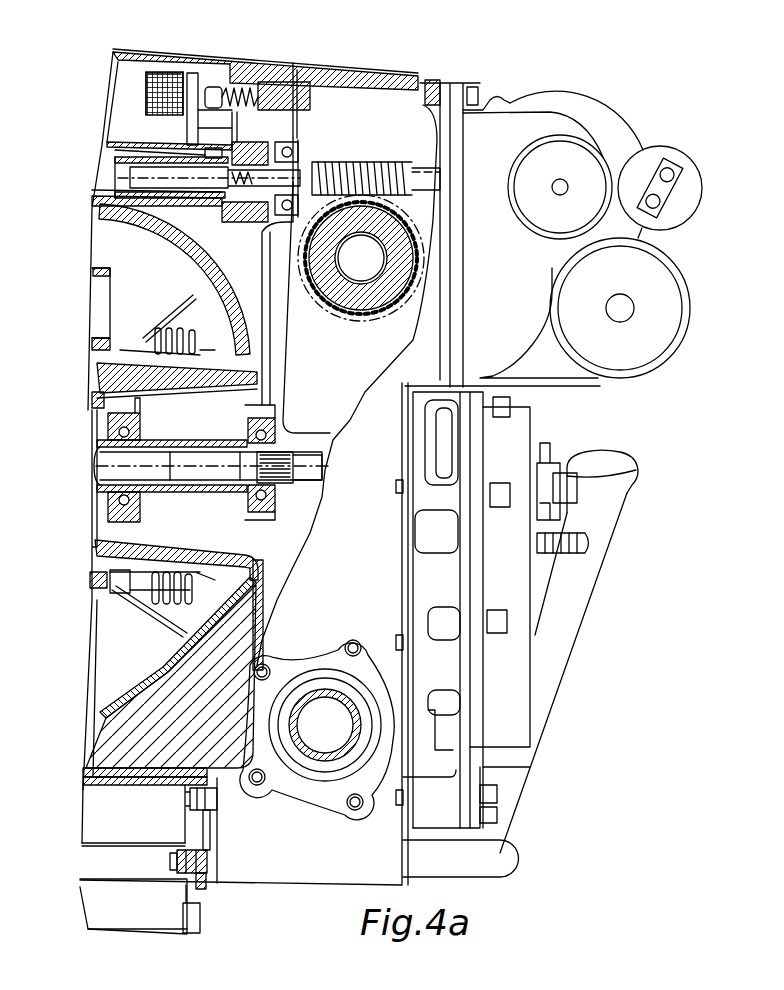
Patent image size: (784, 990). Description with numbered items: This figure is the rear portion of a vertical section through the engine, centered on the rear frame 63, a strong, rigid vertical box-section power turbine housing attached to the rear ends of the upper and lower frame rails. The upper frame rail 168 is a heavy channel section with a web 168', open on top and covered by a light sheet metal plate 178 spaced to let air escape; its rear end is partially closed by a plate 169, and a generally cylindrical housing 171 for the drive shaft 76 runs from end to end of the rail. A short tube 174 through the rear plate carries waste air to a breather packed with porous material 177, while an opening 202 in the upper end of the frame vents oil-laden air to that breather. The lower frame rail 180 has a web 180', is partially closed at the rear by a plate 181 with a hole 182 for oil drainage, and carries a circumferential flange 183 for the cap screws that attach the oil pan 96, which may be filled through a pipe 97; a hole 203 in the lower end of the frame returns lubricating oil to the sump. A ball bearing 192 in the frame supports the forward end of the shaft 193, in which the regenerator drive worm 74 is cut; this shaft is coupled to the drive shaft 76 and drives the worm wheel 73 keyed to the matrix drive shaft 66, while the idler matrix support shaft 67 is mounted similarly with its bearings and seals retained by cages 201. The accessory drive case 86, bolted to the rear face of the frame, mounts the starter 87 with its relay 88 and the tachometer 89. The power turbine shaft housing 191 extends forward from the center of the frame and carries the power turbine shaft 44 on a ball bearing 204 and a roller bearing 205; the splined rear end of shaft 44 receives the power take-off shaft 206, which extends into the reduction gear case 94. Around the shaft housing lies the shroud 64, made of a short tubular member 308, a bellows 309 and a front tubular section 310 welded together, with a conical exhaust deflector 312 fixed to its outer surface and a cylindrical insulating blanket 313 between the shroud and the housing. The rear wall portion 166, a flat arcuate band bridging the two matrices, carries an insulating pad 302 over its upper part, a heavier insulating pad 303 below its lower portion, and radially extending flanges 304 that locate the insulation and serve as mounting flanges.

The power turbine shaft 44 is at (107, 455).
The rear frame 63 is at (271, 335).
The shaft housing shroud 64 is at (163, 641).
The matrix drive shaft 66 is at (387, 292).
The matrix support shaft 67 is at (342, 707).
The worm wheel 73 is at (350, 323).
The regenerator drive worm 74 is at (393, 165).
The drive shaft 76 is at (140, 174).
The accessory drive case 86 is at (592, 107).
The starter 87 is at (656, 364).
The relay 88 is at (687, 188).
The tachometer 89 is at (588, 165).
The reduction gear case 94 is at (448, 675).
The oil pan 96 is at (97, 906).
The pipe 97 is at (573, 608).
The rear wall portion 166 is at (130, 690).
The upper frame rail 168 is at (186, 231).
The web 168' is at (125, 198).
The plate 169 is at (229, 86).
The housing 171 is at (118, 150).
The short tube 174 is at (208, 124).
The porous material 177 is at (172, 72).
The sheet metal plate 178 is at (272, 62).
The lower frame rail 180 is at (120, 830).
The web 180' is at (115, 791).
The plate 181 is at (190, 795).
The hole 182 is at (200, 830).
The circumferential flange 183 is at (80, 860).
The power turbine shaft housing 191 is at (93, 522).
The ball bearing 192 is at (298, 148).
The shaft 193 is at (313, 167).
The cages 201 is at (295, 668).
The opening 202 is at (283, 95).
The hole 203 is at (210, 828).
The ball bearing 204 is at (252, 433).
The roller bearing 205 is at (118, 433).
The power take-off shaft 206 is at (322, 467).
The insulating pad 302 is at (193, 300).
The insulating pad 303 is at (100, 760).
The radially extending flange 304 is at (112, 728).
The short tubular member 308 is at (212, 565).
The bellows 309 is at (158, 612).
The front tubular section 310 is at (100, 598).
The conical exhaust deflector 312 is at (182, 318).
The insulating blanket 313 is at (110, 372).